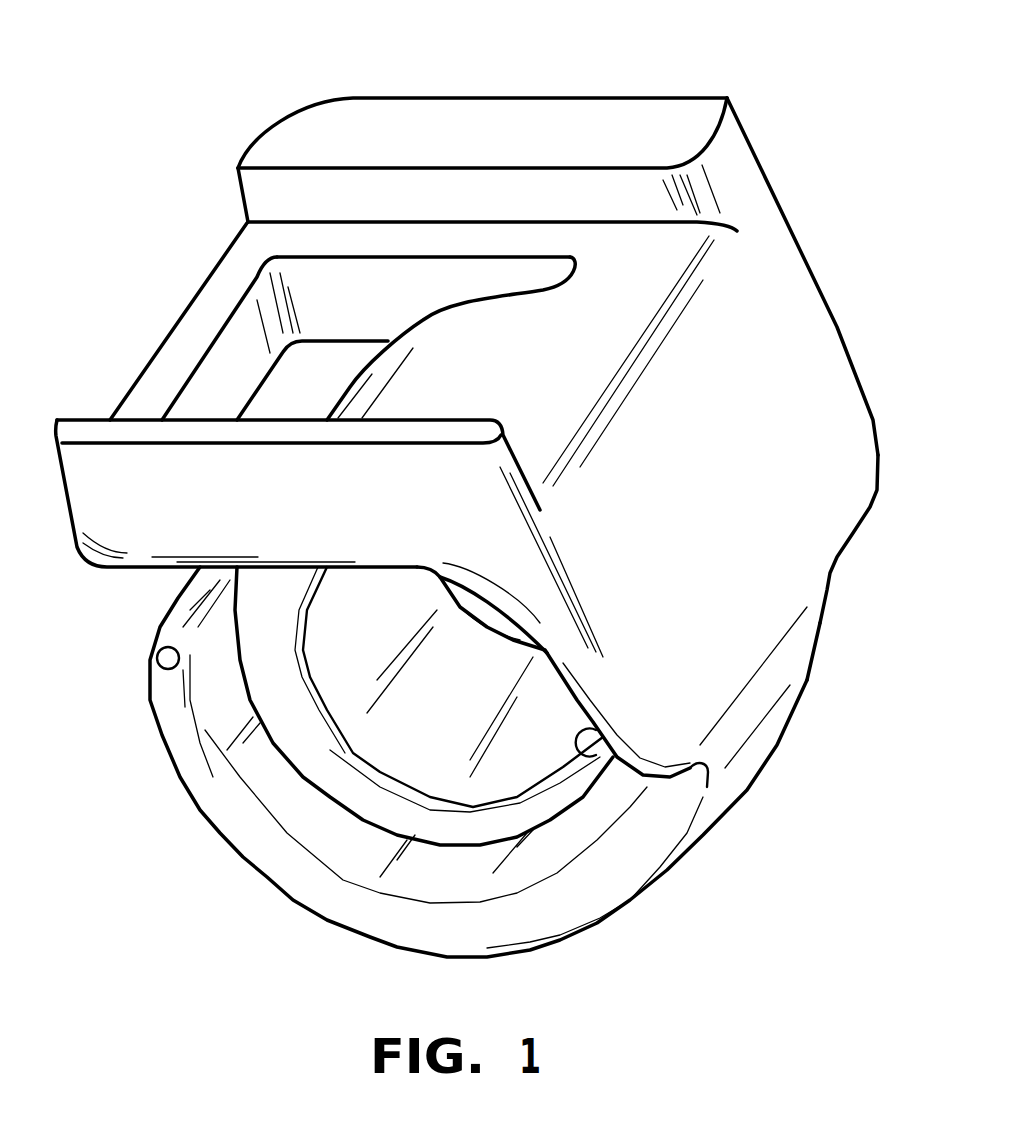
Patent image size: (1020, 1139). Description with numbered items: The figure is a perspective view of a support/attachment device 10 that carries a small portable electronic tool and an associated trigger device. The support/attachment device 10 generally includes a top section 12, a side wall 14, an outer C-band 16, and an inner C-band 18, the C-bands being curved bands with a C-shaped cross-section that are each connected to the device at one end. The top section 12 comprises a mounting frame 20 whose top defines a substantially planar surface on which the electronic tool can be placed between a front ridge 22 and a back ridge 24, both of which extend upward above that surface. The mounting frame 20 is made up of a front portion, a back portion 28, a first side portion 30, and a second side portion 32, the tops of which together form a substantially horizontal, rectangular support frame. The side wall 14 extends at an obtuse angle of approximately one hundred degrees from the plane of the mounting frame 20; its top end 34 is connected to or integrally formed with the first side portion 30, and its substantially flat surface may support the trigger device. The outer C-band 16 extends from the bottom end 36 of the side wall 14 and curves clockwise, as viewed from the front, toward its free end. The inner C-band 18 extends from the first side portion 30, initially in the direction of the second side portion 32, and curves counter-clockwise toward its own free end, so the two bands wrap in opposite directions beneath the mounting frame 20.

The support/attachment device 10 is at (166, 96).
The top section 12 is at (746, 191).
The side wall 14 is at (773, 393).
The outer C-band 16 is at (250, 840).
The inner C-band 18 is at (270, 652).
The mounting frame 20 is at (150, 337).
The front ridge 22 is at (110, 462).
The back ridge 24 is at (548, 125).
The back portion 28 is at (383, 237).
The first side portion 30 is at (585, 330).
The second side portion 32 is at (227, 280).
The top end 34 is at (660, 383).
The bottom end 36 is at (747, 587).